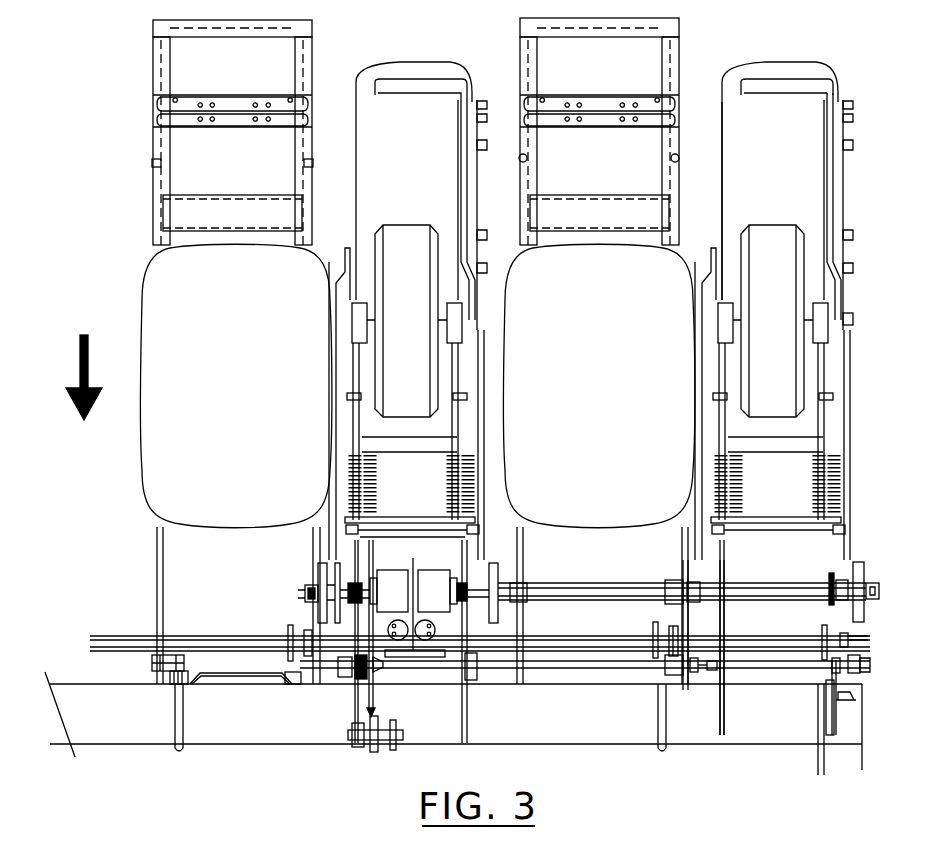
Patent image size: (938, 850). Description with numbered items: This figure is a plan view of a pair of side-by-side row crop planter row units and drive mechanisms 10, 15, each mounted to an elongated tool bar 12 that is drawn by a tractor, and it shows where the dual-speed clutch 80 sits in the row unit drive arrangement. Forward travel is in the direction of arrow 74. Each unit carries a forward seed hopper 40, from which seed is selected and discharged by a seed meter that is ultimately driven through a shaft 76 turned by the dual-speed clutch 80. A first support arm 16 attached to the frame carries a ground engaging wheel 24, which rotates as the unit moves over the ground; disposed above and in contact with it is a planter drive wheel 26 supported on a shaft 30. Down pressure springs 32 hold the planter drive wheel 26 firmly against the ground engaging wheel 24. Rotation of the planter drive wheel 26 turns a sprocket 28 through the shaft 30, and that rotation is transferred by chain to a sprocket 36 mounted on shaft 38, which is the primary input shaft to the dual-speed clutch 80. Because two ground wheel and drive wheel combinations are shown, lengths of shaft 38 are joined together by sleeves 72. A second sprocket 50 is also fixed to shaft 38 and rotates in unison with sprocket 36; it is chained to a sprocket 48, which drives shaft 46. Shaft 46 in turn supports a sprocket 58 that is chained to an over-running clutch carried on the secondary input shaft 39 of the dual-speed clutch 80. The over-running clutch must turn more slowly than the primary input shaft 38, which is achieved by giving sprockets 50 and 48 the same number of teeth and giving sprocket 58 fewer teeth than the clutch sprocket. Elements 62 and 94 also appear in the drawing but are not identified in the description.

The planter row unit and drive mechanism 10 is at (707, 93).
The tool bar 12 is at (584, 725).
The planter row unit and drive mechanism 15 is at (333, 98).
The first support arm 16 is at (832, 370).
The ground engaging wheel 24 is at (775, 66).
The planter drive wheel 26 is at (790, 225).
The sprocket 28 is at (845, 305).
The shaft 30 is at (852, 320).
The down pressure springs 32 is at (812, 502).
The sprocket 36 is at (488, 563).
The shaft 38 is at (568, 592).
The secondary input shaft 39 is at (304, 597).
The seed hopper 40 is at (221, 392).
The shaft 46 is at (433, 668).
The sprocket 48 is at (688, 680).
The second sprocket 50 is at (680, 578).
The sprocket 58 is at (338, 680).
The drive gear 62 is at (318, 580).
The sleeves 72 is at (523, 588).
The arrow 74 is at (80, 362).
The shaft 76 is at (233, 641).
The dual-speed clutch 80 is at (414, 560).
The component 94 is at (180, 841).